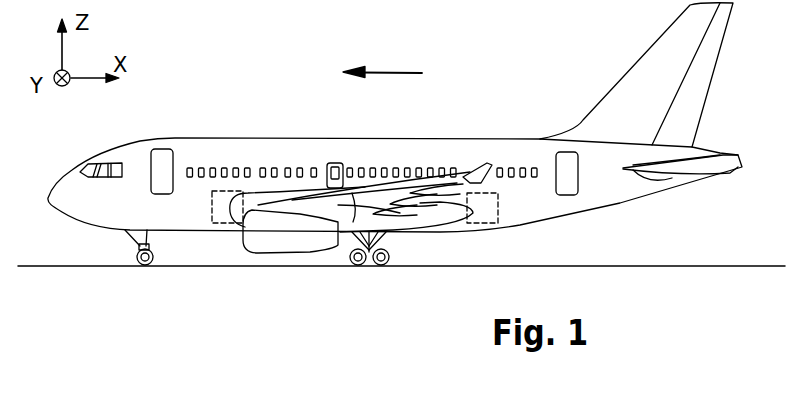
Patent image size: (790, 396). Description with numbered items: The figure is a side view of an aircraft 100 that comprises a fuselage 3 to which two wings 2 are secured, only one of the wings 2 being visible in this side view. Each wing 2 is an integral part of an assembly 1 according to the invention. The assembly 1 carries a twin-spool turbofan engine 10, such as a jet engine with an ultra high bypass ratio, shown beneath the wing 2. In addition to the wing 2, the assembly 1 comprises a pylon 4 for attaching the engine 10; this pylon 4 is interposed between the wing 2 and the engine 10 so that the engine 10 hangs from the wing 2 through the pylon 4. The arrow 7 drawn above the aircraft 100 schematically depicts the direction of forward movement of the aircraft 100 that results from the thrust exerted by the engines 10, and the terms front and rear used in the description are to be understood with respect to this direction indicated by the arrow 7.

The aircraft 100 is at (218, 115).
The assembly 1 is at (396, 234).
The wing 2 is at (348, 193).
The fuselage 3 is at (503, 163).
The pylon 4 is at (285, 186).
The arrow 7 is at (395, 72).
The twin-spool turbofan engine 10 is at (230, 241).